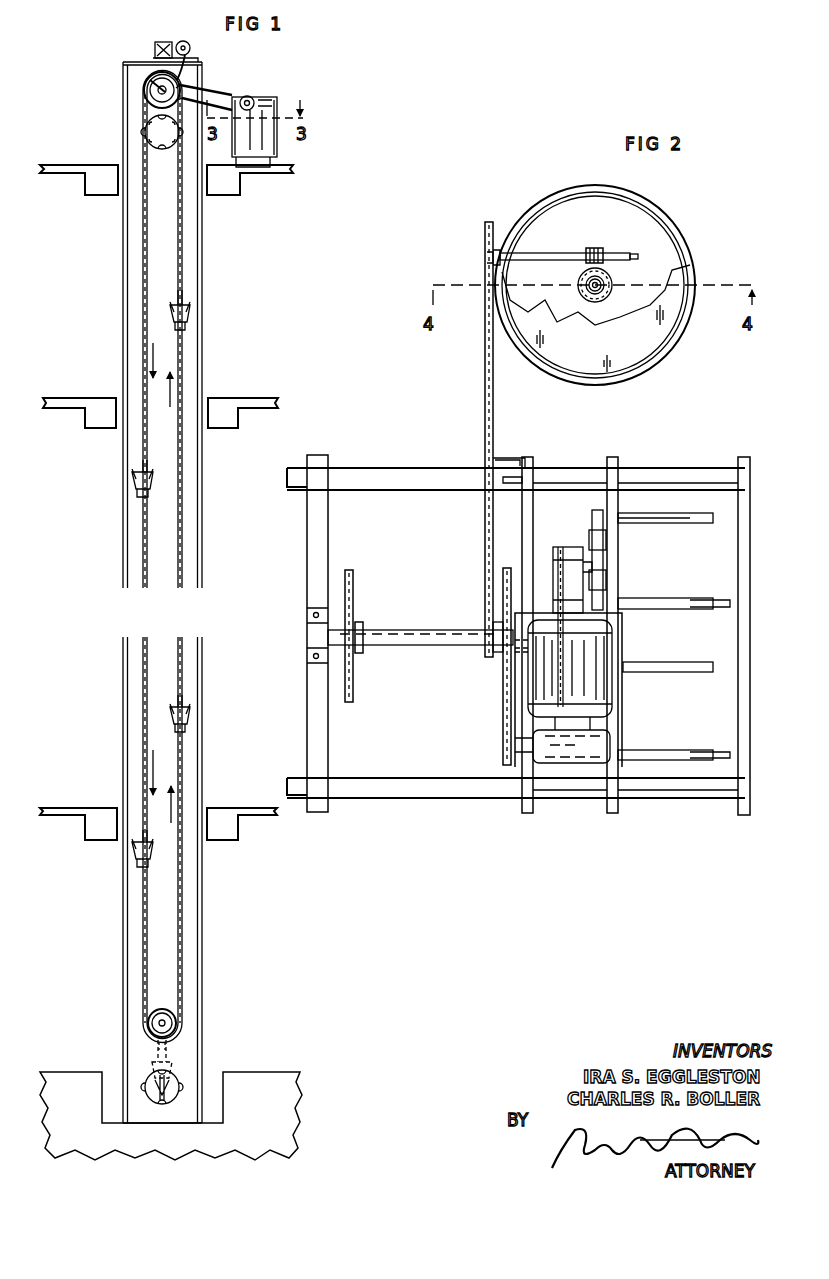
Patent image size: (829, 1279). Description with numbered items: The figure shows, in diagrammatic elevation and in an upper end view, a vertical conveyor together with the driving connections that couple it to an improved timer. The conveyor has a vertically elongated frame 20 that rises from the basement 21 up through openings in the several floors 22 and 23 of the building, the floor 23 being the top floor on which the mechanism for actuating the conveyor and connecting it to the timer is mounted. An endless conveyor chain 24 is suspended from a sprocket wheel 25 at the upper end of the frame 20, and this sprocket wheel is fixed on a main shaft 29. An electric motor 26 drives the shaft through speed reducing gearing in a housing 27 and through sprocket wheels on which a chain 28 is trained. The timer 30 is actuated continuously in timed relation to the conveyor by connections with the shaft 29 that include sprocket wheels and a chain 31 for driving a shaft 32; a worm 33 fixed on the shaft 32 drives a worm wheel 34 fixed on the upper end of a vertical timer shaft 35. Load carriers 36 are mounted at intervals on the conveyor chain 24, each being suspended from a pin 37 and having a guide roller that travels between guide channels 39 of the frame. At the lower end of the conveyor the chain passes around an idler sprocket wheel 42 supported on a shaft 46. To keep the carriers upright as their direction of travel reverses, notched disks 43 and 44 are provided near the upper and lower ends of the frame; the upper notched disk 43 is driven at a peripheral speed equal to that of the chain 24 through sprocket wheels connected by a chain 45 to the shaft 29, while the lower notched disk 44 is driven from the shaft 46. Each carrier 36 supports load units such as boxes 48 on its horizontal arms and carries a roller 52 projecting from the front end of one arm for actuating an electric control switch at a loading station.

In FIG. 1, the frame 20 is at (125, 518).
In FIG. 2, the frame 20 is at (415, 786).
In FIG. 1, the basement 21 is at (250, 1098).
In FIG. 1, the floor 22 is at (222, 406).
In FIG. 1, the top floor 23 is at (220, 187).
In FIG. 1, the endless conveyor chain 24 is at (140, 245).
In FIG. 1, the sprocket wheel 25 is at (160, 90).
In FIG. 2, the sprocket wheel 25 is at (583, 591).
In FIG. 1, the electric motor 26 is at (163, 42).
In FIG. 2, the electric motor 26 is at (592, 655).
In FIG. 1, the housing 27 is at (191, 48).
In FIG. 2, the housing 27 is at (592, 745).
In FIG. 2, the chain 28 is at (505, 688).
In FIG. 1, the main shaft 29 is at (150, 82).
In FIG. 2, the main shaft 29 is at (400, 642).
In FIG. 1, the timer 30 is at (270, 140).
In FIG. 2, the timer 30 is at (655, 256).
In FIG. 1, the chain 31 is at (222, 92).
In FIG. 2, the chain 31 is at (484, 394).
In FIG. 2, the shaft 32 is at (556, 254).
In FIG. 2, the worm 33 is at (598, 250).
In FIG. 2, the worm wheel 34 is at (583, 298).
In FIG. 2, the vertical timer shaft 35 is at (598, 294).
In FIG. 1, the load carrier 36 is at (190, 322).
In FIG. 2, the load carrier 36 is at (596, 520).
In FIG. 1, the pin 37 is at (182, 295).
In FIG. 2, the guide channel 39 is at (600, 560).
In FIG. 1, the idler sprocket wheel 42 is at (150, 1023).
In FIG. 1, the upper notched disk 43 is at (160, 133).
In FIG. 1, the lower notched disk 44 is at (175, 1085).
In FIG. 2, the chain 45 is at (353, 600).
In FIG. 1, the shaft 46 is at (165, 1023).
In FIG. 1, the box 48 is at (146, 478).
In FIG. 2, the roller 52 is at (725, 602).